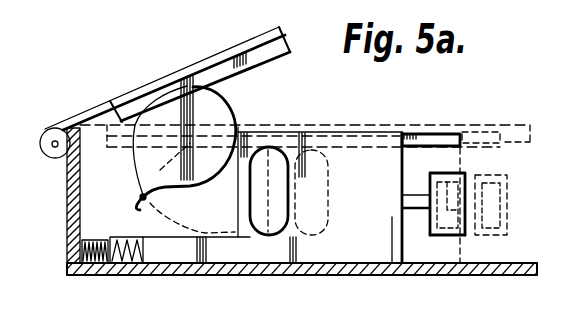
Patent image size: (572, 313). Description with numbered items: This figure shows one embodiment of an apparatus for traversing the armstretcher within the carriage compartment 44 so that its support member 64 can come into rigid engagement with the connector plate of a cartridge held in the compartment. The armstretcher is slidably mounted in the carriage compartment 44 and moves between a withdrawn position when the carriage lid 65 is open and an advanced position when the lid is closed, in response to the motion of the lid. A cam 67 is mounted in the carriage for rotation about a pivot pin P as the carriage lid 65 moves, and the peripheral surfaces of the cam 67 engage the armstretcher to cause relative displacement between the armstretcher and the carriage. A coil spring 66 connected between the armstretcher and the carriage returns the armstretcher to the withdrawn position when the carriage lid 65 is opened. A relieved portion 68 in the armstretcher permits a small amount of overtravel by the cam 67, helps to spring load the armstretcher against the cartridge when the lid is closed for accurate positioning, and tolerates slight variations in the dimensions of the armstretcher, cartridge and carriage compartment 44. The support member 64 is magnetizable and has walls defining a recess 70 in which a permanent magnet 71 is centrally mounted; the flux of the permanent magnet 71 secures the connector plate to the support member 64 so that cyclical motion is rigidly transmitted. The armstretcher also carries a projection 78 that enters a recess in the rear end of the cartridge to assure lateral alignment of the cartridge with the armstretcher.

The carriage compartment 44 is at (513, 160).
The support member 64 is at (433, 218).
The carriage lid 65 is at (146, 86).
The coil spring 66 is at (67, 247).
The cam 67 is at (222, 117).
The relieved portion 68 is at (277, 157).
The recess 70 is at (453, 187).
The permanent magnet 71 is at (455, 232).
The projection 78 is at (428, 133).
The pivot pin P is at (133, 195).